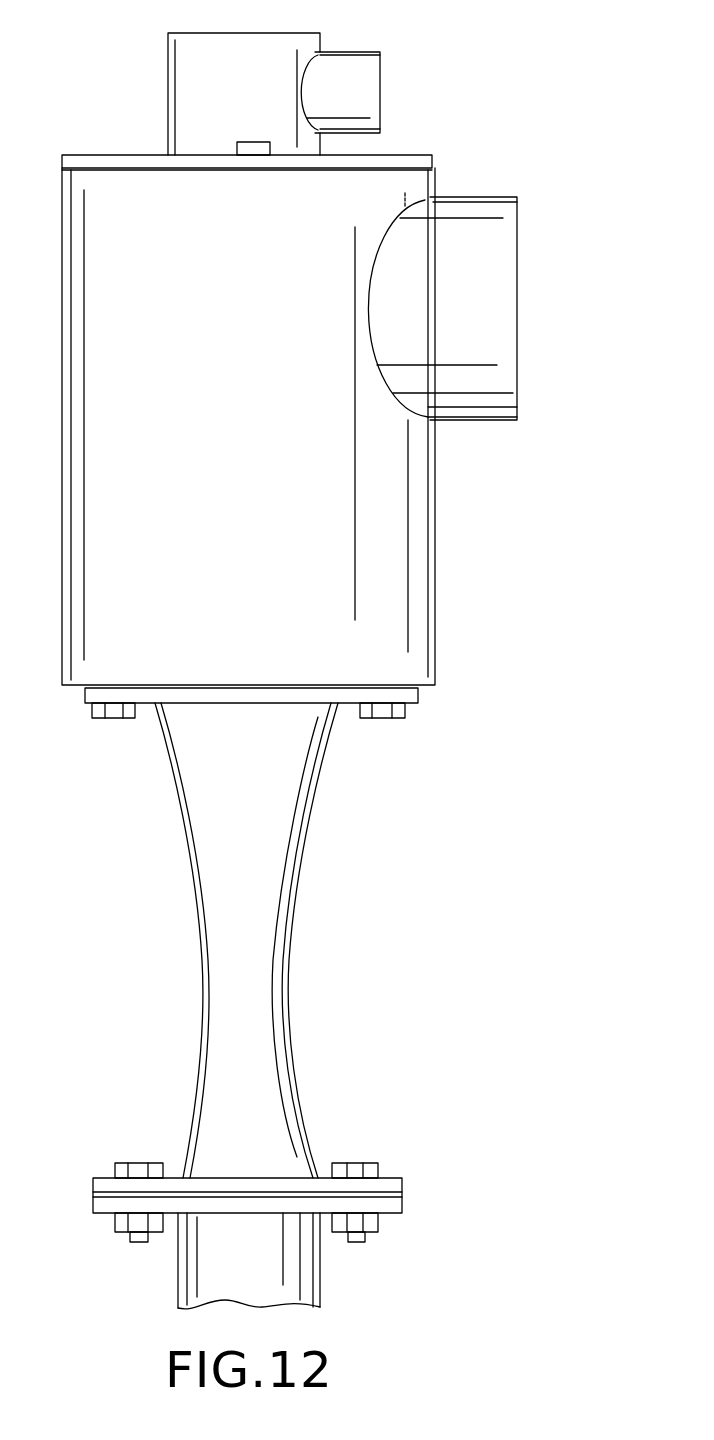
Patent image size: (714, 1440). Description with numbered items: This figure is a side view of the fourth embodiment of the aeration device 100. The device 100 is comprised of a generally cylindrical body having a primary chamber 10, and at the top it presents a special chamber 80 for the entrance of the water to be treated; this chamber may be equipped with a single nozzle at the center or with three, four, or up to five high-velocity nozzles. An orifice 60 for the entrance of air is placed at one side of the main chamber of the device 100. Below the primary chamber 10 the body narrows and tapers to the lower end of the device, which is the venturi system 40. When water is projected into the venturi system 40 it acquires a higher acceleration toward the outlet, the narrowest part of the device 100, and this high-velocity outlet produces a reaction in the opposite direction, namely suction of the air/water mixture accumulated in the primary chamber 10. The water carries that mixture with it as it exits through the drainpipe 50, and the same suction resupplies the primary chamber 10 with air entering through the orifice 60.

The primary chamber 10 is at (255, 470).
The venturi system 40 is at (272, 940).
The drainpipe 50 is at (178, 1270).
The orifice 60 is at (517, 297).
The special chamber 80 is at (218, 68).
The aeration device 100 is at (470, 782).